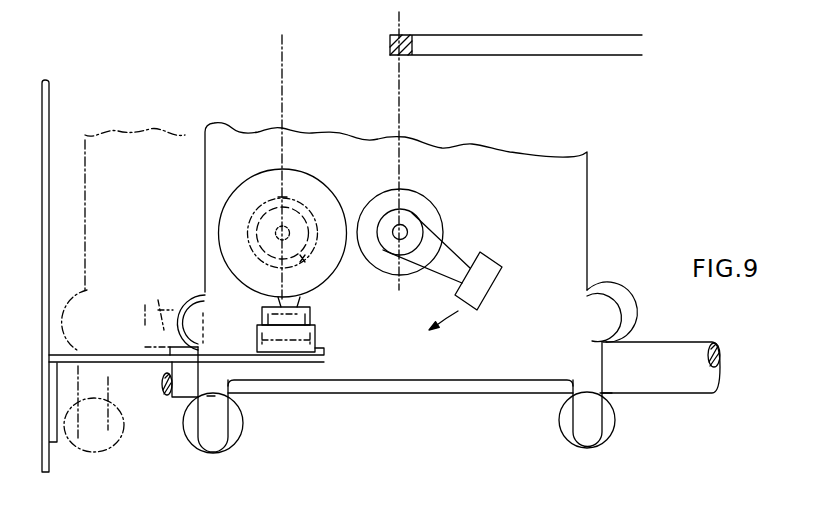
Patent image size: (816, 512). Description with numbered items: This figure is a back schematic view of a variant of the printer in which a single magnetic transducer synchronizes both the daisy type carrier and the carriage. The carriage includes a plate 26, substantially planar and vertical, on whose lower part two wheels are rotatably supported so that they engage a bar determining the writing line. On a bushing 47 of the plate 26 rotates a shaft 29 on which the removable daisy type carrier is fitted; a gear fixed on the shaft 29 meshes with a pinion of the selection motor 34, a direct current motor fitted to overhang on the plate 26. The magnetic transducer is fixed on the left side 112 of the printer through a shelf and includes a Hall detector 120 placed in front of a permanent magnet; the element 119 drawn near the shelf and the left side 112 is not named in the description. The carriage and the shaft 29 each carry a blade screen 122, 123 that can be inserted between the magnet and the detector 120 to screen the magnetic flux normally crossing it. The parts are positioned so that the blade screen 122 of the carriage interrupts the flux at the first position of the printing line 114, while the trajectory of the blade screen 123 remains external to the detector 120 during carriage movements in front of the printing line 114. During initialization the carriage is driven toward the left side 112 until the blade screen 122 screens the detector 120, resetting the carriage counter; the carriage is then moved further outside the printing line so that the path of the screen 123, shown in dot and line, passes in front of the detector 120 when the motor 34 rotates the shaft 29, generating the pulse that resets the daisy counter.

The left side 112 is at (45, 119).
The printing line 114 is at (480, 50).
The plate 26 is at (582, 241).
The selection motor 34 is at (305, 178).
The shaft 29 is at (405, 228).
The bushing 47 is at (430, 220).
The blade screen 123 is at (490, 277).
The blade screen 122 is at (162, 306).
The Hall detector 120 is at (315, 333).
The platform bar 119 is at (98, 358).